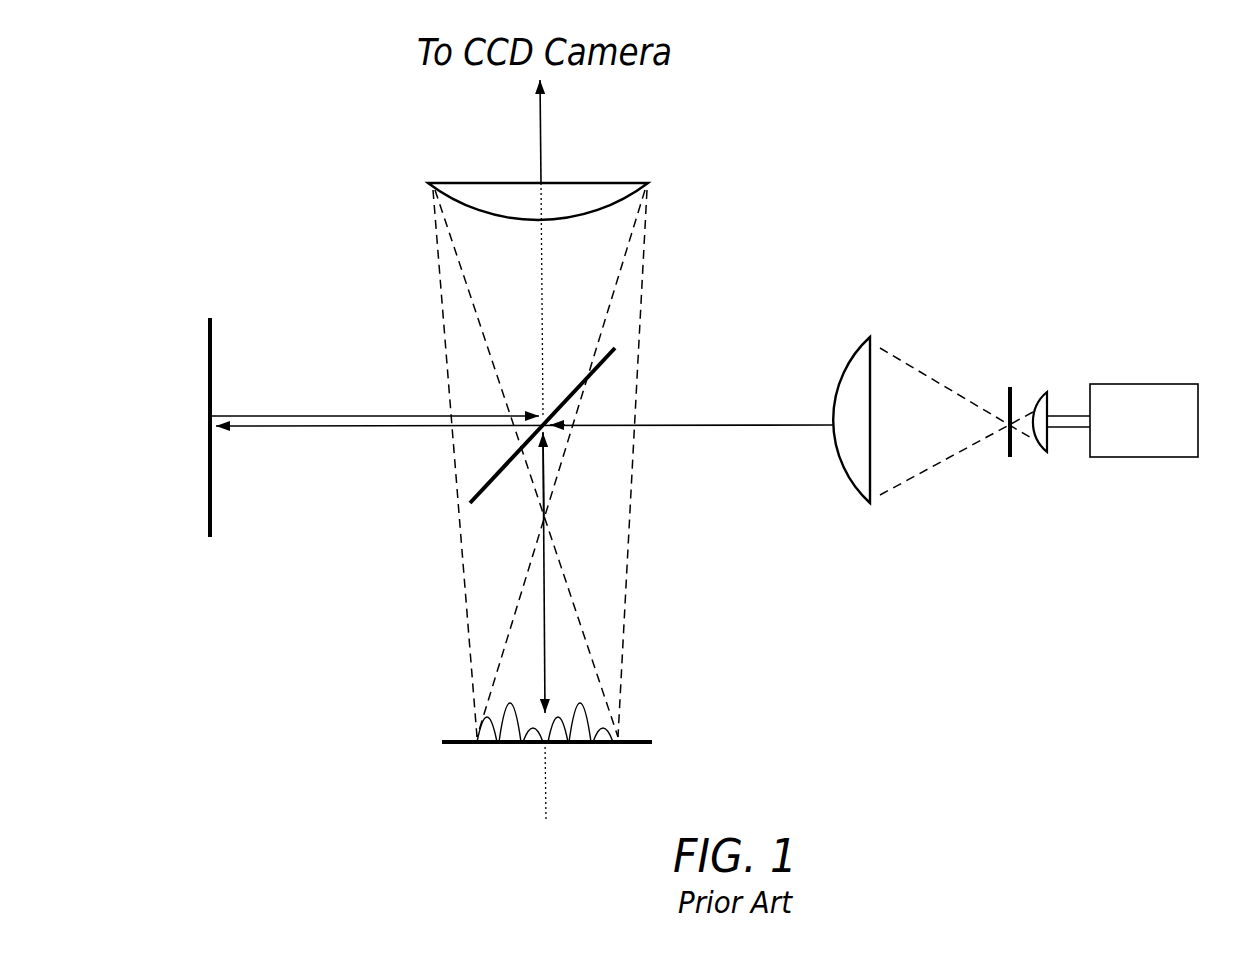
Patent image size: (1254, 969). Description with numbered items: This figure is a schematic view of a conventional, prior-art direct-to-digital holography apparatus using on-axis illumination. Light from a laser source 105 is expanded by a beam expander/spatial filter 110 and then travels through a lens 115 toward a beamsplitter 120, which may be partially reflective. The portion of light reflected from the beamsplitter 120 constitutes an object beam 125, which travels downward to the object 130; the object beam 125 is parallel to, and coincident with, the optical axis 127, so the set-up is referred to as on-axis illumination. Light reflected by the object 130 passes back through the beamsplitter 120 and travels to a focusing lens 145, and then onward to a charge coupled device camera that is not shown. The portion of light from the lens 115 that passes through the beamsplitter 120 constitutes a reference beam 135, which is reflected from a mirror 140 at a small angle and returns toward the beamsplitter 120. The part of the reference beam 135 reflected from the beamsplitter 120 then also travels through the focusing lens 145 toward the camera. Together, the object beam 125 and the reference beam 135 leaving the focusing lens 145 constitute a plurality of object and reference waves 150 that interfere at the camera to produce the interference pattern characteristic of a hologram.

The laser source 105 is at (1138, 378).
The beam expander/spatial filter 110 is at (1022, 400).
The lens 115 is at (861, 508).
The beamsplitter 120 is at (601, 373).
The object beam 125 is at (550, 626).
The optical axis 127 is at (546, 273).
The object 130 is at (537, 749).
The reference beam 135 is at (353, 409).
The mirror 140 is at (218, 508).
The focusing lens 145 is at (517, 228).
The object and reference waves 150 is at (546, 142).